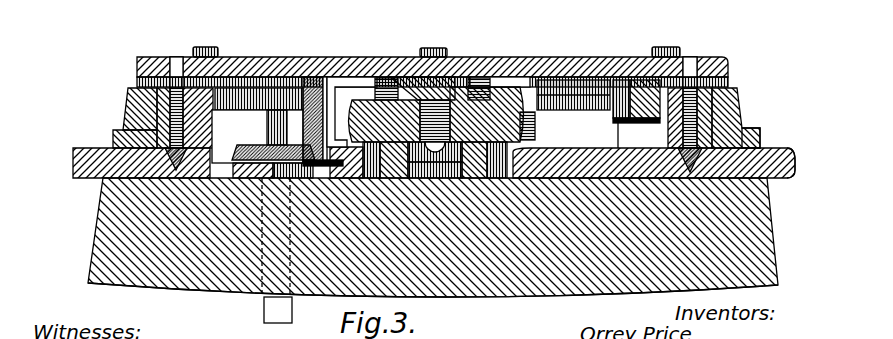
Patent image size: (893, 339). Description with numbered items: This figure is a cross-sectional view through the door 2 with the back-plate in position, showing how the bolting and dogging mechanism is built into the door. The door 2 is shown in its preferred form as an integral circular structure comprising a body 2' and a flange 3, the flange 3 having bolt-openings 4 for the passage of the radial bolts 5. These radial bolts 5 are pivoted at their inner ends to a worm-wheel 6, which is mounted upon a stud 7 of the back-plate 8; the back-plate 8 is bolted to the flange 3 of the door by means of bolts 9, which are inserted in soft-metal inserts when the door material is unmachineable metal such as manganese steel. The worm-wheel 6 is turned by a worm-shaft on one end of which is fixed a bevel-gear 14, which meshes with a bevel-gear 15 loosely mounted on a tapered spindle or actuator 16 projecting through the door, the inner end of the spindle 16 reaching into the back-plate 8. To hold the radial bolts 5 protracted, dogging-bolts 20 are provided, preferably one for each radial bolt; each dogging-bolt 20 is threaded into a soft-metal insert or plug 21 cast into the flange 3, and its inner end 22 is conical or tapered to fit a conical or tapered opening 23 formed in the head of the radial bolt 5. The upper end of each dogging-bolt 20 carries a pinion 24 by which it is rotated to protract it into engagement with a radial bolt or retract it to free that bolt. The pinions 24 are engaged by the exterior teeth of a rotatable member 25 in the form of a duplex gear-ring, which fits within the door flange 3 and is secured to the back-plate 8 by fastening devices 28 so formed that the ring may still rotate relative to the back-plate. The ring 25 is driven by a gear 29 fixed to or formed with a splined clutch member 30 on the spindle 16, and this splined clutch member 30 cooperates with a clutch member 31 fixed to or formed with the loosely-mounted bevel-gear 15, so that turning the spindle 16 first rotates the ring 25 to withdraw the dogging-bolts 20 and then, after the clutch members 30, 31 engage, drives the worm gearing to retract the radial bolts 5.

The door 2 is at (433, 250).
The body 2' is at (441, 237).
The flange 3 is at (735, 108).
The bolt-openings 4 is at (757, 145).
The radial bolts 5 is at (778, 160).
The worm-wheel 6 is at (527, 136).
The stud 7 is at (412, 88).
The back-plate 8 is at (462, 62).
The bolts 9 is at (214, 47).
The bevel-gear 14 is at (330, 82).
The bevel-gear 15 is at (242, 160).
The tapered spindle or actuator 16 is at (298, 310).
The dogging-bolts 20 is at (172, 128).
The soft-metal insert or plug 21 is at (127, 100).
The inner end 22 is at (150, 175).
The conical or tapered opening 23 is at (176, 165).
The pinion 24 is at (148, 81).
The rotatable member 25 is at (573, 78).
The fastening devices 28 is at (628, 118).
The gear 29 is at (316, 78).
The splined clutch member 30 is at (273, 112).
The clutch member 31 is at (267, 133).